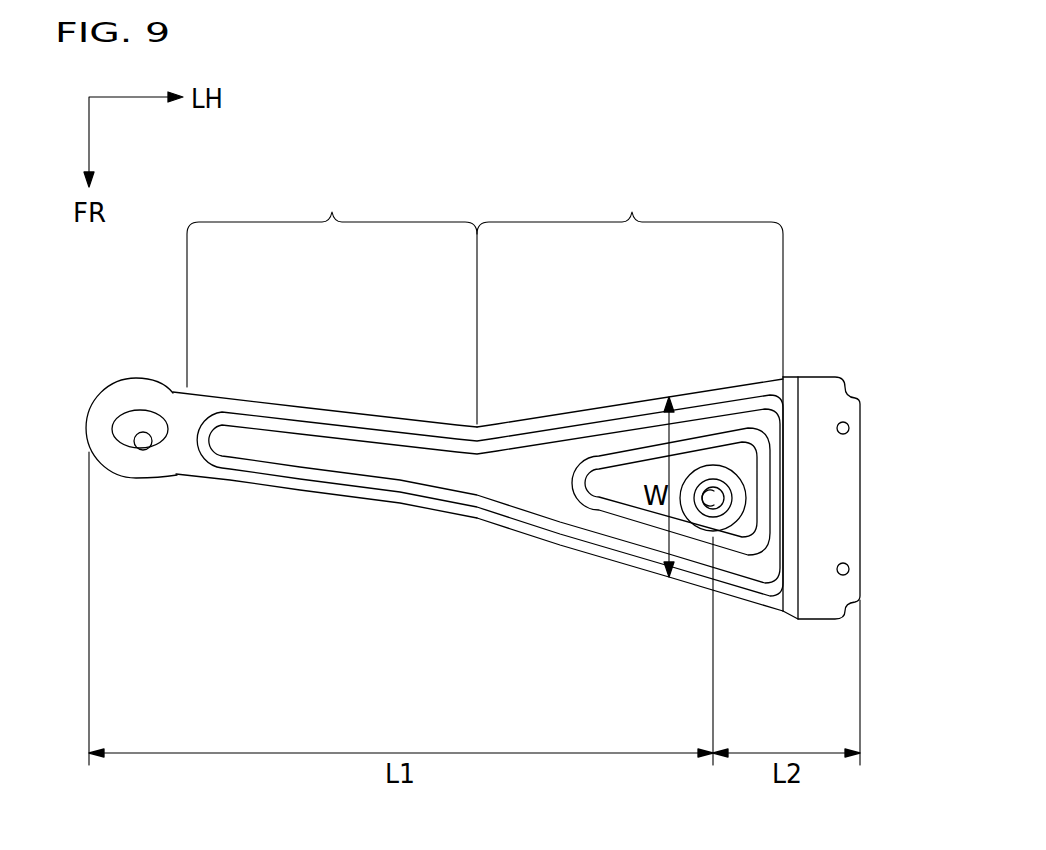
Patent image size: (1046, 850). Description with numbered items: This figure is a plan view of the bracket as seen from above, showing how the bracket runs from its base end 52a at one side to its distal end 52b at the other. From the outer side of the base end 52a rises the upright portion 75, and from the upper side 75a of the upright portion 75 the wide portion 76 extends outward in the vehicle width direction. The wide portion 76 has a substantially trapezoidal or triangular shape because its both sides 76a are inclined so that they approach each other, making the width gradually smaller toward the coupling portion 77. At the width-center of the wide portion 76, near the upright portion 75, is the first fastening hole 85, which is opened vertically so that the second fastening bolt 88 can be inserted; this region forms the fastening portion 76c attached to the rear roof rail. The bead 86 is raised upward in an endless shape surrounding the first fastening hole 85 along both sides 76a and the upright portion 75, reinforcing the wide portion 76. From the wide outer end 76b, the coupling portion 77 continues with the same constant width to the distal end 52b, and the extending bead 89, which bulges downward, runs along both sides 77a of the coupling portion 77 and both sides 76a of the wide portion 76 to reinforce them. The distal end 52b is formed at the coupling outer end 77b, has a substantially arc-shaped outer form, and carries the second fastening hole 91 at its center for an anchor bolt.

The base end 52a is at (837, 535).
The distal end 52b is at (110, 405).
The upright portion 75 is at (798, 457).
The upper side 75a is at (792, 505).
The wide portion 76 is at (630, 277).
The both sides 76a is at (638, 403).
The wide outer end 76b is at (477, 472).
The fastening portion 76c is at (713, 466).
The coupling portion 77 is at (332, 301).
The both sides 77a is at (320, 408).
The coupling outer end 77b is at (182, 438).
The first fastening hole 85 is at (705, 506).
The bead 86 is at (758, 553).
The second fastening bolt 88 is at (725, 498).
The extending bead 89 is at (355, 478).
The second fastening hole 91 is at (140, 436).